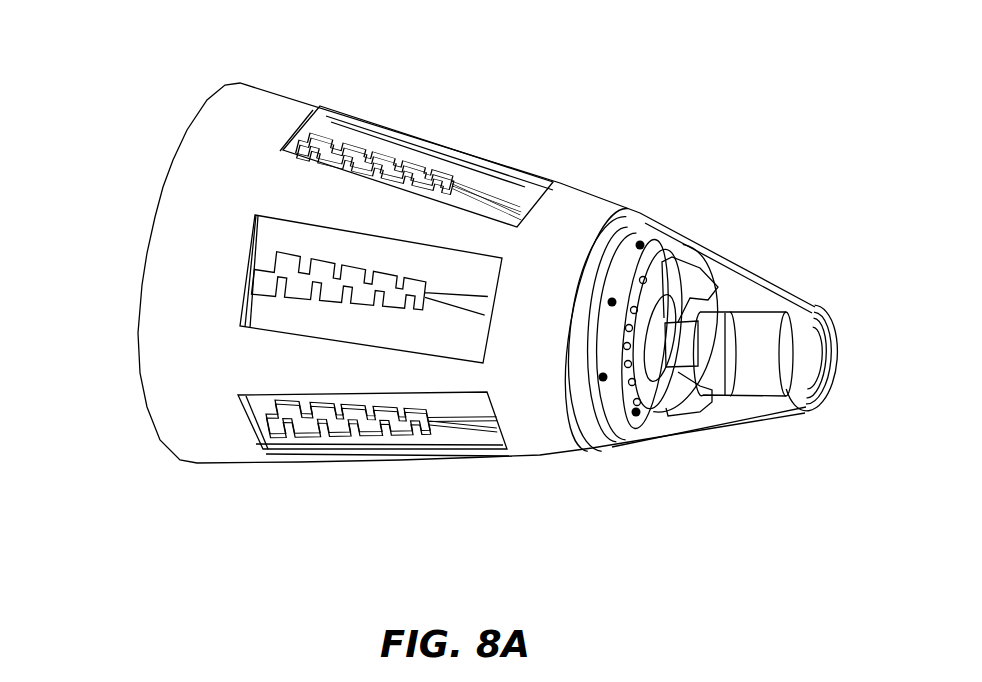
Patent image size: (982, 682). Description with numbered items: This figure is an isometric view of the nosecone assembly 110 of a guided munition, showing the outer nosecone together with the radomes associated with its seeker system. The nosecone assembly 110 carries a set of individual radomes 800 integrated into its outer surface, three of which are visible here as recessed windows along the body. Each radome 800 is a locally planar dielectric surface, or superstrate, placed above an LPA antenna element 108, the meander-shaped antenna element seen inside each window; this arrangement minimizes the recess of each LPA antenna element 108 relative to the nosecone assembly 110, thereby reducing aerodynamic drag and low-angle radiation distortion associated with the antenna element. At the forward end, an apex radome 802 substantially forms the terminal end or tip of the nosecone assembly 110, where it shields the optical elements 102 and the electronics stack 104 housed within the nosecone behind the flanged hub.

The nosecone assembly 110 is at (148, 38).
The radome 800 is at (306, 237).
The LPA antenna element 108 is at (388, 152).
The electronics stack 104 is at (650, 357).
The optical elements 102 is at (766, 354).
The apex radome 802 is at (810, 305).